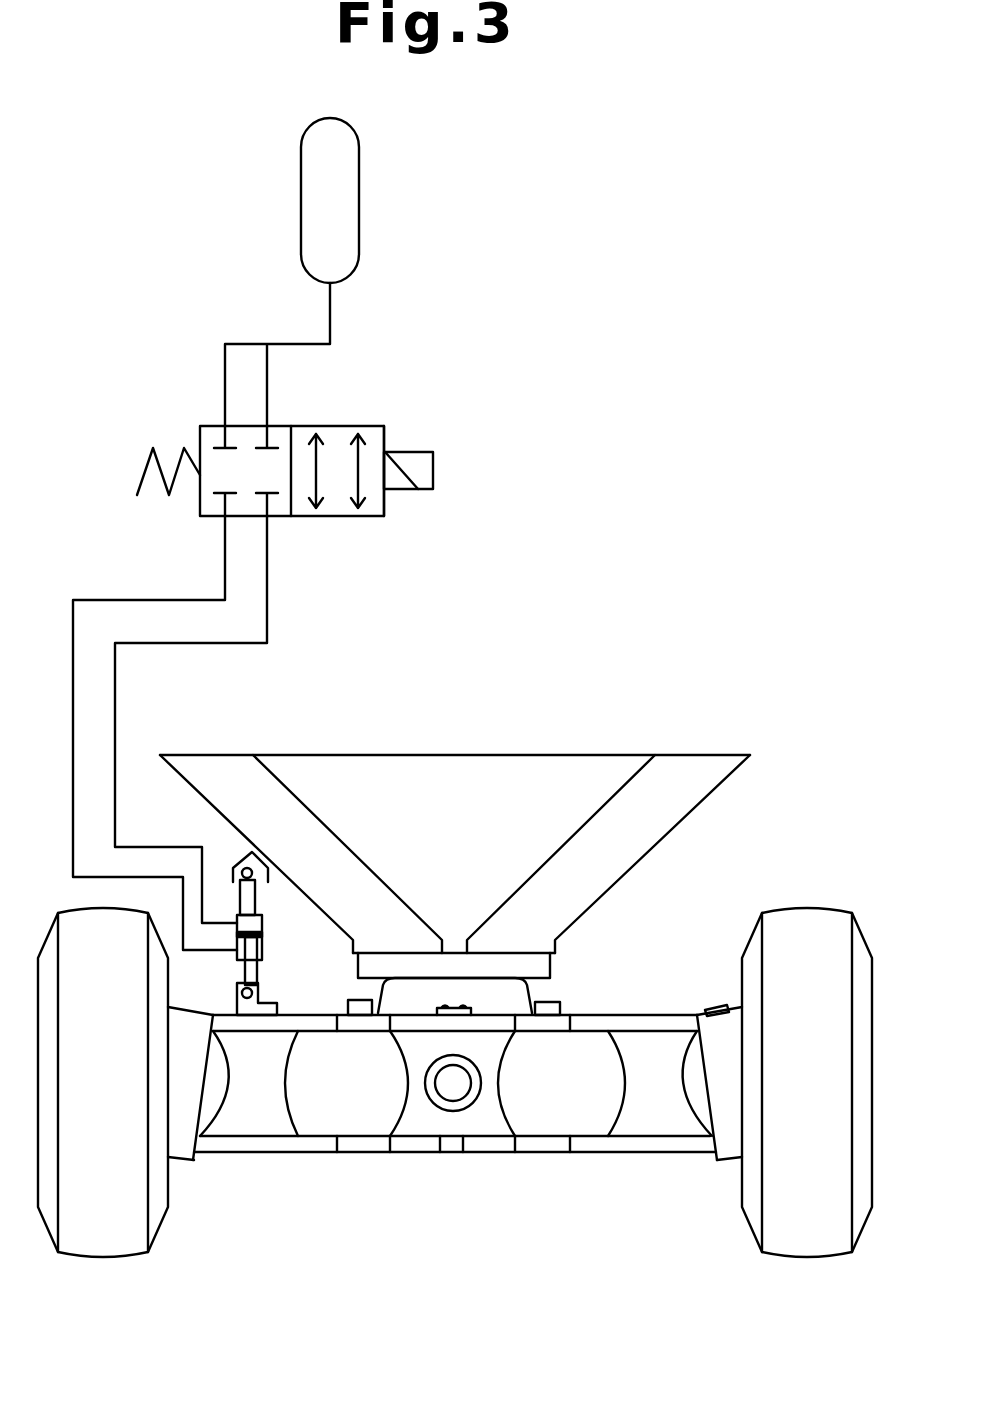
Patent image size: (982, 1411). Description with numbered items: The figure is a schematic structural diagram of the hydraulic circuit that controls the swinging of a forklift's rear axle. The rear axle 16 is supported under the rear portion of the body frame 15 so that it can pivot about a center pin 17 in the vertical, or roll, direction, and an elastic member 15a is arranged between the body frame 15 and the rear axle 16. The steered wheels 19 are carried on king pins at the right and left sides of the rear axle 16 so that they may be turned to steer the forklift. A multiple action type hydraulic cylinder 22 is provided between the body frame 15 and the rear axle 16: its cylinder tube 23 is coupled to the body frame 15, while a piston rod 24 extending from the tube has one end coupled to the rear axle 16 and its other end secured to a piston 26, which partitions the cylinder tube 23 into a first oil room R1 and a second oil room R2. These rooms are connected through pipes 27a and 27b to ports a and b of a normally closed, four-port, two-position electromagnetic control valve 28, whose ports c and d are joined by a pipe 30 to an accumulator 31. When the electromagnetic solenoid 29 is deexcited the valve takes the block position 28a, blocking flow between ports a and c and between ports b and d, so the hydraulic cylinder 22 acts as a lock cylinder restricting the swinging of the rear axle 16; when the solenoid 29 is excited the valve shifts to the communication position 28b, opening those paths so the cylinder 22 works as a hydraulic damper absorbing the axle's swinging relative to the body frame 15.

The accumulator 31 is at (360, 216).
The pipe 30 is at (278, 343).
The electromagnetic control valve 28 is at (381, 426).
The block position 28a is at (198, 530).
The communication position 28b is at (371, 518).
The electromagnetic solenoid 29 is at (426, 443).
The pipe 27a is at (73, 678).
The pipe 27b is at (117, 715).
The cylinder tube 23 is at (280, 915).
The hydraulic cylinder 22 is at (262, 930).
The piston 26 is at (262, 940).
The piston rod 24 is at (258, 972).
The first oil room R1 is at (237, 958).
The second oil room R2 is at (237, 917).
The body frame 15 is at (665, 755).
The elastic member 15a is at (533, 988).
The rear axle 16 is at (597, 1147).
The center pin 17 is at (453, 1100).
The steered wheels 19 is at (107, 1253).